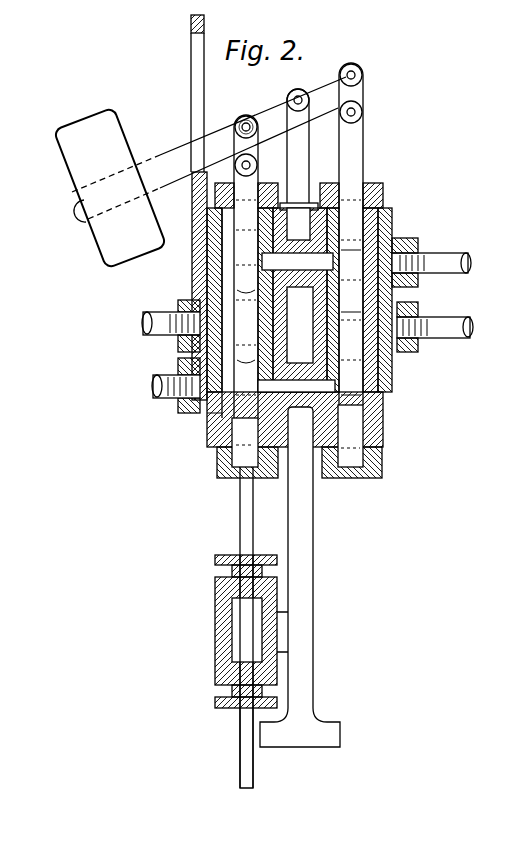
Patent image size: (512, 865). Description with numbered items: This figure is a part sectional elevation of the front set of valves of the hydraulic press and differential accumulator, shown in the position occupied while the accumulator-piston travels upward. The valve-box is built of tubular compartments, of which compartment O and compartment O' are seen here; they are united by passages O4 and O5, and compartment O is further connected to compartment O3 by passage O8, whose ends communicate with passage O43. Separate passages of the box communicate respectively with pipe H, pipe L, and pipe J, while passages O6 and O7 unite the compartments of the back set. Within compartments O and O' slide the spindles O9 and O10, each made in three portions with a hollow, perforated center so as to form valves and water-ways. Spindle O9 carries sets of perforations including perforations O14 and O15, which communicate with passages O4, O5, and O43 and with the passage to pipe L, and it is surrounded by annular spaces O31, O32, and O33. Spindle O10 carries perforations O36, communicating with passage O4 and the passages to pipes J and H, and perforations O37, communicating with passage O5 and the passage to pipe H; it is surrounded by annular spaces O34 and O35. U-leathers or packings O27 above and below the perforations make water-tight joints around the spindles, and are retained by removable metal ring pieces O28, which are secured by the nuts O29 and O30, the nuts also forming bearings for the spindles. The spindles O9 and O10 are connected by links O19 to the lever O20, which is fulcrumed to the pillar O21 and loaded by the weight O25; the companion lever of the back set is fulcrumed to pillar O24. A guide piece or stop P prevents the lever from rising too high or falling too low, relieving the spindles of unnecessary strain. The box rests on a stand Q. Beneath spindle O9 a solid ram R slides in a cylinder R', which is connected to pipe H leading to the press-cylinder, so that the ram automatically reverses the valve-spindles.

The guide piece or stop P is at (189, 30).
The weight O25 is at (110, 187).
The lever O20 is at (160, 158).
The spindle O9 is at (240, 185).
The passage O7 is at (253, 135).
The pillar O21 is at (299, 164).
The spindle O10 is at (357, 143).
The links O19 is at (363, 92).
The nut O29 is at (383, 195).
The nut O30 is at (200, 203).
The U-leathers or packings O27 is at (192, 243).
The removable metal ring pieces O28 is at (200, 283).
The pillar O24 is at (392, 413).
The annular space O32 is at (300, 300).
The passage O4 is at (297, 263).
The compartment O3 is at (296, 386).
The annular space O33 is at (210, 443).
The passage O43 is at (207, 413).
The compartment O' is at (385, 436).
The annular space O31 is at (232, 279).
The passage O6 is at (246, 310).
The perforations O15 is at (247, 376).
The annular space O35 is at (352, 386).
The passage O5 is at (351, 300).
The annular space O34 is at (343, 250).
The pipe J is at (447, 254).
The perforations O36 is at (403, 236).
The pipe H is at (452, 313).
The perforations O37 is at (390, 352).
The pipe L is at (158, 313).
The perforations O14 is at (178, 343).
The passage O8 is at (176, 368).
The compartment O is at (245, 309).
The stand Q is at (305, 548).
The ram R is at (229, 627).
The cylinder R' is at (234, 671).